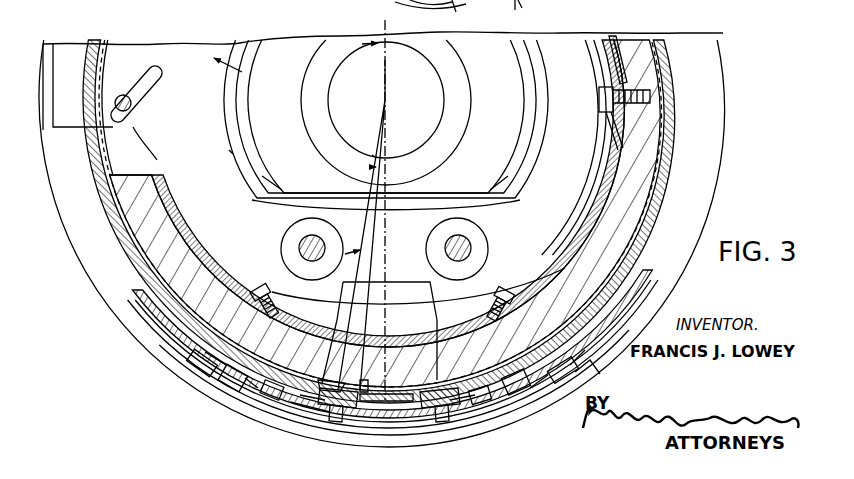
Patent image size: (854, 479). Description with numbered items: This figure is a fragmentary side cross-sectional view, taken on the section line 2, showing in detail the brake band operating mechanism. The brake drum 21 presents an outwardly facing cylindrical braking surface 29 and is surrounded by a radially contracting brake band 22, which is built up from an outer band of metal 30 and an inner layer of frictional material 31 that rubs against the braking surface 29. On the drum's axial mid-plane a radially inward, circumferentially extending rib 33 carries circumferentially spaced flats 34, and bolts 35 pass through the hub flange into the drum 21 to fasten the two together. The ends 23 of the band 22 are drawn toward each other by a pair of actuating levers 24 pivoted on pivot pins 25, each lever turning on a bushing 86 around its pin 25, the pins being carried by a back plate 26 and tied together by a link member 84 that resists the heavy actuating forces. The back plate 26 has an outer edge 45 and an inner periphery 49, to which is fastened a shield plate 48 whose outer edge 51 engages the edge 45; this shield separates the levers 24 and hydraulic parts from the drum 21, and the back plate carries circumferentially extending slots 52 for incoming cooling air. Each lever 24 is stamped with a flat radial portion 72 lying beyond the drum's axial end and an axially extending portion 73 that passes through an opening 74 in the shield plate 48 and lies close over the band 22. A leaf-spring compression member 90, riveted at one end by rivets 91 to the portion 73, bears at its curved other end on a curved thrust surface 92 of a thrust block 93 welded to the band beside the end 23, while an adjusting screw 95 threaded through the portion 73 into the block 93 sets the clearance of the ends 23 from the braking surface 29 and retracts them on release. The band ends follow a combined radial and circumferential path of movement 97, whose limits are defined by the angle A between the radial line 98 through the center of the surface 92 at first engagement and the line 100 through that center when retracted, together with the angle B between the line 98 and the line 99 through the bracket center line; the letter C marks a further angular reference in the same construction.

The brake drum 21 is at (645, 142).
The brake band 22 is at (678, 180).
The ends of brake band 23 is at (380, 400).
The actuating lever 24 is at (246, 200).
The pivot pin 25 is at (385, 258).
The back plate 26 is at (82, 50).
The braking surface 29 is at (640, 246).
The outer band of metal 30 is at (182, 338).
The frictional material 31 is at (300, 360).
The rib 33 is at (580, 226).
The flats 34 is at (620, 112).
The bolts 35 is at (602, 84).
The outer edge of back plate 45 is at (43, 44).
The shield plate 48 is at (620, 48).
The inner periphery of back plate 49 is at (296, 132).
The outer edge of shield plate 51 is at (165, 360).
The slots 52 is at (226, 96).
The flat portion of lever 72 is at (228, 150).
The axially extending portion of lever 73 is at (230, 385).
The opening in shield plate 74 is at (594, 366).
The link member 84 is at (413, 268).
The bushing 86 is at (282, 243).
The compression member 90 is at (270, 398).
The rivets 91 is at (205, 372).
The thrust surface 92 is at (325, 378).
The thrust block 93 is at (352, 406).
The adjusting screw 95 is at (330, 403).
The path of movement 97 is at (366, 380).
The radial line 98 is at (381, 185).
The line through bracket center line 99 is at (387, 80).
The line through retracted thrust surface center 100 is at (372, 152).
The section line 2 is at (500, 8).
The angle A is at (352, 255).
The angle B is at (331, 85).
The angle C is at (378, 167).